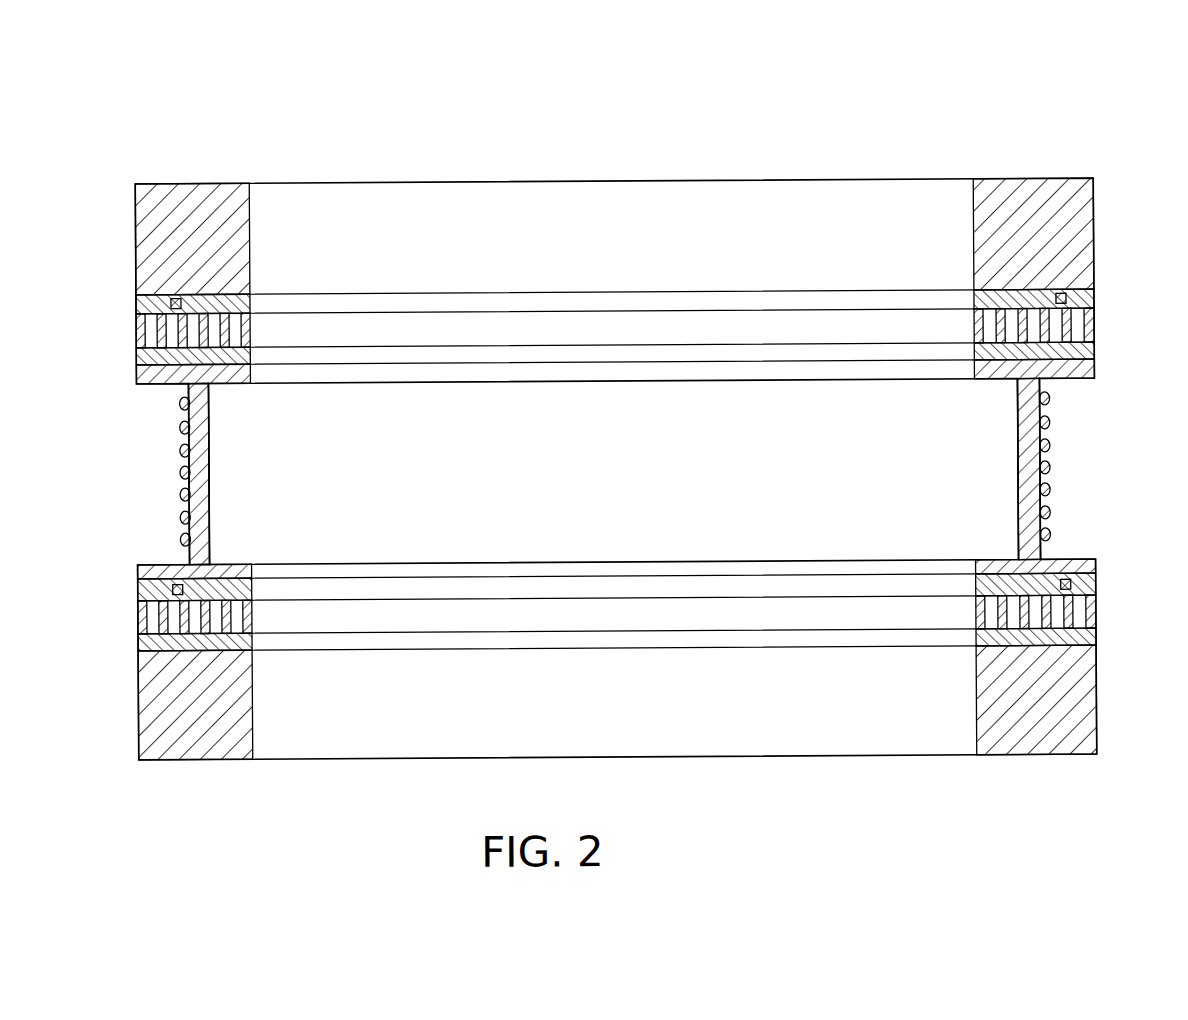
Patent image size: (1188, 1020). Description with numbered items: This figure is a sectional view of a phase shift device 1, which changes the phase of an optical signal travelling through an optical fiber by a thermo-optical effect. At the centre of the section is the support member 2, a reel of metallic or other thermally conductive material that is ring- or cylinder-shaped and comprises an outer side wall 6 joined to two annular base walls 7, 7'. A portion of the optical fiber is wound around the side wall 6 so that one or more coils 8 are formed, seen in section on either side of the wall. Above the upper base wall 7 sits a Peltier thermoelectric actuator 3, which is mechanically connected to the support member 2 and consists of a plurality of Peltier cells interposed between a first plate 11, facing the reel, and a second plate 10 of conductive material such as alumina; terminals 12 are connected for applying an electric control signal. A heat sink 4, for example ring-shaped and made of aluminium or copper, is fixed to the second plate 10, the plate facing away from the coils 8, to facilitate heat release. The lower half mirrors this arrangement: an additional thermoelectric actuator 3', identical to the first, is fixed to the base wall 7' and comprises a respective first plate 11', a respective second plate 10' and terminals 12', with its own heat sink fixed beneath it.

The phase shift device 1 is at (313, 134).
The support member 2 is at (140, 398).
The thermoelectric actuator 3 is at (569, 334).
The additional thermoelectric actuator 3' is at (565, 635).
The heat sink 4 is at (1070, 200).
The outer side wall 6 is at (1052, 388).
The annular base wall 7 is at (615, 462).
The annular base wall 7' is at (658, 572).
The coils 8 is at (1055, 487).
The second plate 10 is at (651, 298).
The second plate 10' is at (564, 679).
The first plate 11 is at (650, 364).
The first plate 11' is at (567, 594).
The terminals 12 is at (603, 267).
The terminals 12' is at (640, 570).